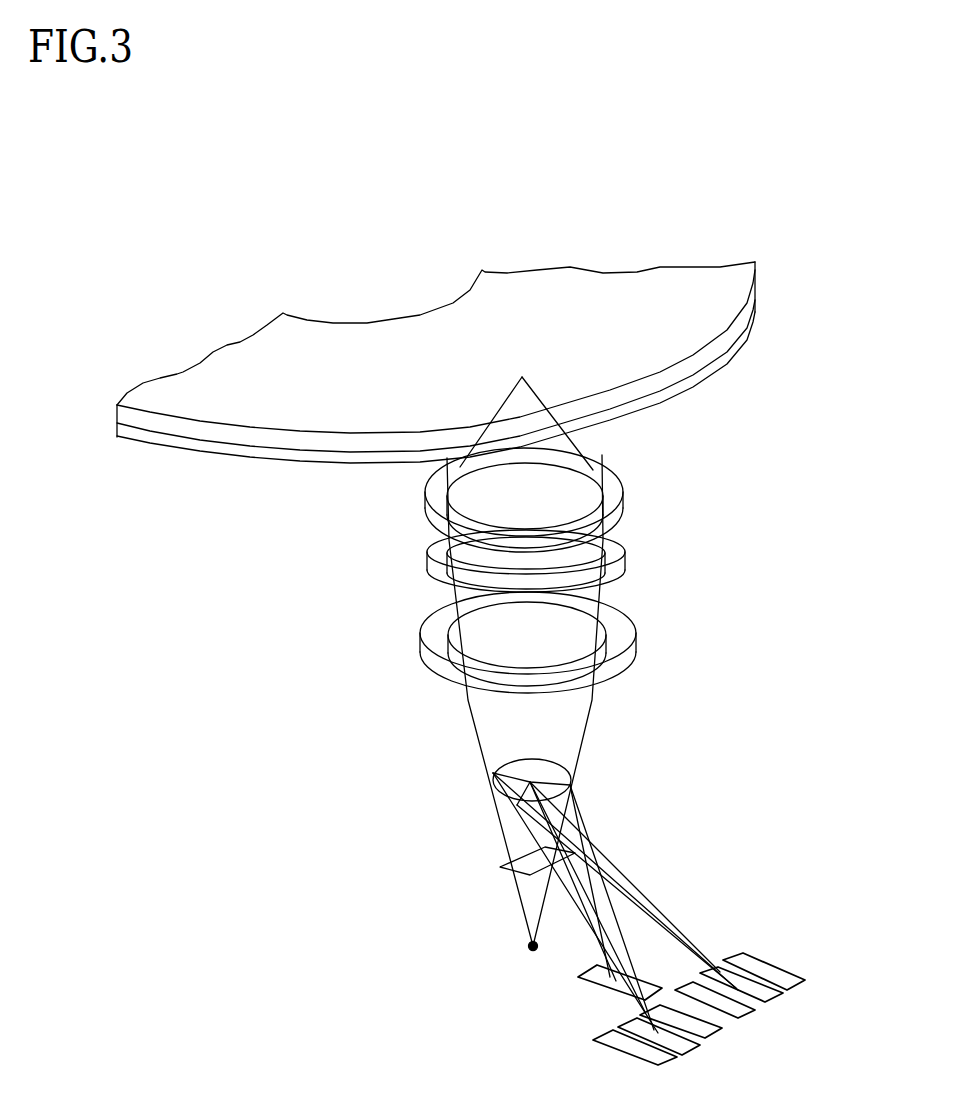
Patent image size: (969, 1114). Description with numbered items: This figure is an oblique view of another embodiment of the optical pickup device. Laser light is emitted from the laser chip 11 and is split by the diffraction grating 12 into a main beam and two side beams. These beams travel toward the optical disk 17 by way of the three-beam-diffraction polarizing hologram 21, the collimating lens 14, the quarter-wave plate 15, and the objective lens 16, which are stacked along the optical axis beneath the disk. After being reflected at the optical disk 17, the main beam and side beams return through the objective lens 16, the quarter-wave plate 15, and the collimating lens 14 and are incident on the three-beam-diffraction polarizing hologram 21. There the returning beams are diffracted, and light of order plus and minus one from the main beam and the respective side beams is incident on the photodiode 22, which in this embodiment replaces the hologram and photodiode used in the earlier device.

The laser chip 11 is at (531, 948).
The diffraction grating 12 is at (497, 868).
The collimating lens 14 is at (423, 633).
The quarter-wave plate 15 is at (437, 553).
The objective lens 16 is at (440, 493).
The optical disk 17 is at (545, 282).
The three-beam-diffraction polarizing hologram 21 is at (522, 762).
The photodiode 22 is at (773, 953).